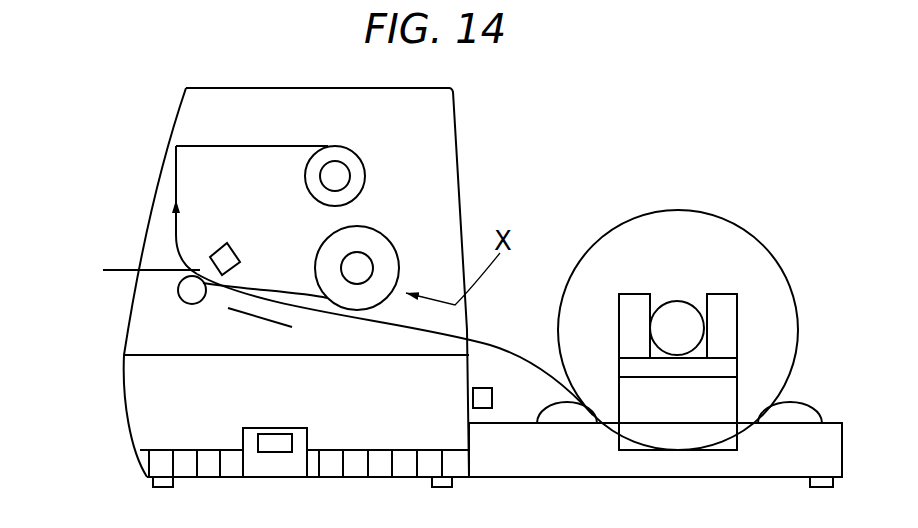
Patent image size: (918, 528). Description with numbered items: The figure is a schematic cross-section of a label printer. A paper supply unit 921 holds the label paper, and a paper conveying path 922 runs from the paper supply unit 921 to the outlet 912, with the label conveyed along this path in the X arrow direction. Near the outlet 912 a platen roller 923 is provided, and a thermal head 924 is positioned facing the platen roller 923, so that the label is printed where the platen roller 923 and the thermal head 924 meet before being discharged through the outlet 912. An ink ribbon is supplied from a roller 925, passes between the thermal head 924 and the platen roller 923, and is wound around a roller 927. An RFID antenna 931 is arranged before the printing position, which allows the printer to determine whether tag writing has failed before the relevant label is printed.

The outlet 912 is at (116, 249).
The paper supply unit 921 is at (745, 206).
The paper conveying path 922 is at (527, 330).
The platen roller 923 is at (178, 300).
The thermal head 924 is at (237, 252).
The roller 925 is at (390, 246).
The roller 927 is at (378, 135).
The RFID antenna 931 is at (267, 315).